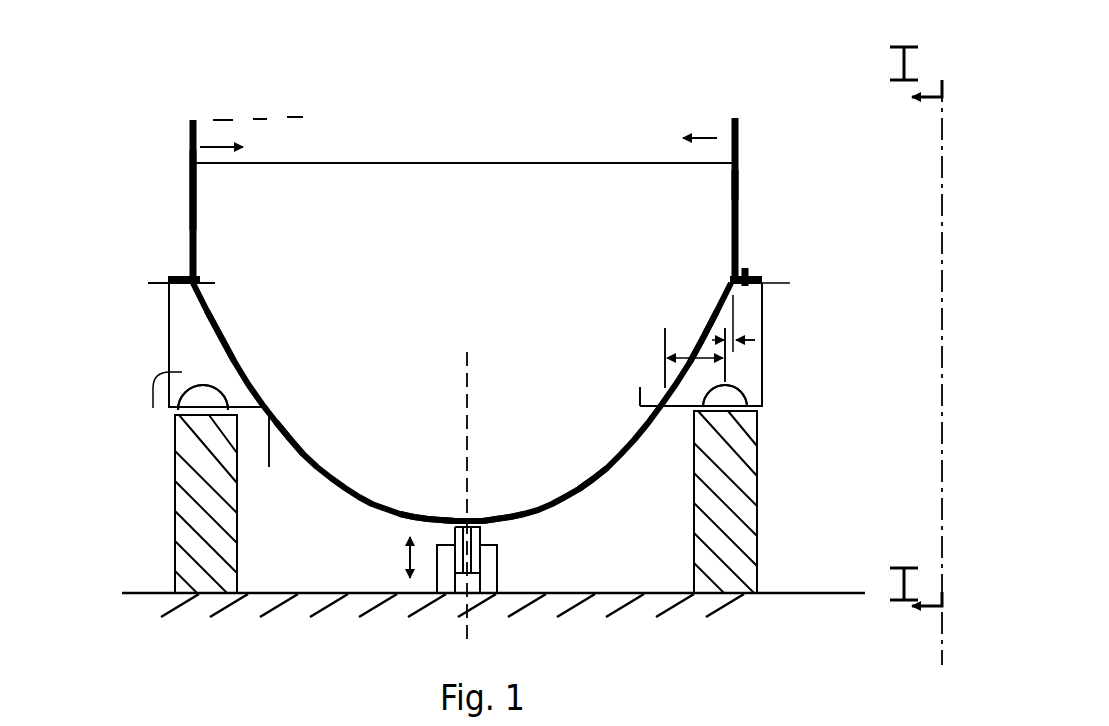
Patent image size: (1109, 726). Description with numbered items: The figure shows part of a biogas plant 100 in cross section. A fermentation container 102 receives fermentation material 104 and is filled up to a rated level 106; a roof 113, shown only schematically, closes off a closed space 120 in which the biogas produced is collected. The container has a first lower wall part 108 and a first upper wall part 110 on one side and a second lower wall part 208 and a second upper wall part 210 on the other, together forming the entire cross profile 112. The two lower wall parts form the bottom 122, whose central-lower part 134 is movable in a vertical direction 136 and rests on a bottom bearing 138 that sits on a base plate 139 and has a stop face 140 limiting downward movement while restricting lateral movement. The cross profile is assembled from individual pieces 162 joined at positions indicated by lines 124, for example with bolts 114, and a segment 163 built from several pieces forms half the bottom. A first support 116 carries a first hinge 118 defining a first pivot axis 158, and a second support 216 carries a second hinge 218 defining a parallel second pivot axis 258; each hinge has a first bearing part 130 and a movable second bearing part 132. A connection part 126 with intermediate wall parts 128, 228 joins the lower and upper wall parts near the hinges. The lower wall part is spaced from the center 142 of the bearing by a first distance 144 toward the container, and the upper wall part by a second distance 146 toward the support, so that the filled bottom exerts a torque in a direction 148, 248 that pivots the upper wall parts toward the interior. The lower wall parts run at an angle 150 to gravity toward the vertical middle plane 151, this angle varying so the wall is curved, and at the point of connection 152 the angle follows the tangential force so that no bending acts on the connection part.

The biogas plant 100 is at (796, 142).
The fermentation container 102 is at (740, 213).
The fermentation material 104 is at (742, 250).
The rated level 106 is at (295, 145).
The first lower wall part 108 is at (650, 475).
The first upper wall part 110 is at (730, 183).
The entire cross profile 112 is at (415, 318).
The roof 113 is at (262, 118).
The bolts 114 is at (760, 292).
The first support 116 is at (757, 494).
The first hinge 118 is at (750, 387).
The closed space 120 is at (655, 136).
The bottom 122 is at (600, 508).
The lines 124 is at (189, 121).
The connection part 126 is at (215, 395).
The intermediate wall part 128 is at (700, 302).
The first bearing part 130 is at (205, 392).
The second bearing part 132 is at (180, 478).
The central-lower part 134 is at (460, 517).
The vertical direction 136 is at (405, 553).
The bottom bearing 138 is at (434, 578).
The base plate 139 is at (780, 591).
The stop face 140 is at (483, 542).
The center of the bearing 142 is at (733, 373).
The first distance 144 is at (685, 340).
The second distance 146 is at (755, 340).
The direction of torque 148 is at (708, 137).
The angle 150 is at (300, 462).
The vertical middle plane 151 is at (470, 408).
The point of connection 152 is at (287, 387).
The first pivot axis 158 is at (758, 445).
The individual pieces 162 is at (190, 190).
The segment 163 is at (580, 487).
The second lower wall part 208 is at (292, 463).
The second upper wall part 210 is at (196, 222).
The second support 216 is at (185, 528).
The second hinge 218 is at (186, 392).
The intermediate wall part 228 is at (234, 346).
The direction of torque 248 is at (215, 145).
The second pivot axis 258 is at (125, 466).